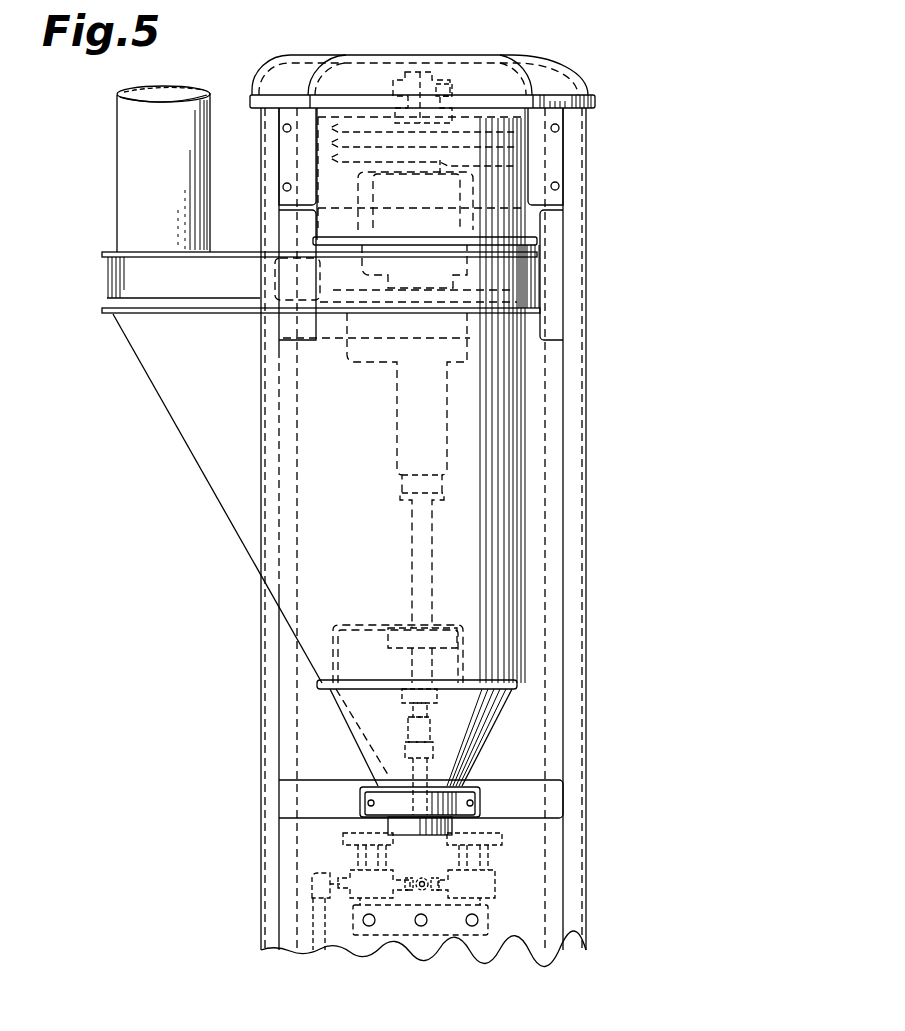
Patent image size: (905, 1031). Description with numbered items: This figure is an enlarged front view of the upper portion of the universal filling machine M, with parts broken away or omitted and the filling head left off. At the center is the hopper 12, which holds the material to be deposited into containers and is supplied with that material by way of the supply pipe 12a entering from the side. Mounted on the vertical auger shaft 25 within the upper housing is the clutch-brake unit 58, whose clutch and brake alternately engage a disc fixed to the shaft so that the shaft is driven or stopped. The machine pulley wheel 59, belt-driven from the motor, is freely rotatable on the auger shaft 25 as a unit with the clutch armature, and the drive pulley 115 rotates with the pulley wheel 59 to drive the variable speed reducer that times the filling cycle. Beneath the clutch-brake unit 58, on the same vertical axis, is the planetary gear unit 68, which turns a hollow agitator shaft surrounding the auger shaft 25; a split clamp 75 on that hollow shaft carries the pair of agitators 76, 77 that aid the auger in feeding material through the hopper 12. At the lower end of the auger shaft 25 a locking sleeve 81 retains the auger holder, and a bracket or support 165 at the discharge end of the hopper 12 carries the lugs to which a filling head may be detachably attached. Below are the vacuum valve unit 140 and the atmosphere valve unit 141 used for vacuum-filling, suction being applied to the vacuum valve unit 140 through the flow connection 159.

The universal filling machine M is at (630, 448).
The auger shaft 25 is at (417, 76).
The drive pulley 115 is at (448, 86).
The machine pulley wheel 59 is at (358, 157).
The clutch-brake unit 58 is at (360, 226).
The supply pipe 12a is at (123, 177).
The hopper 12 is at (219, 475).
The planetary gear unit 68 is at (470, 362).
The split clamp 75 is at (436, 634).
The agitator 76 is at (362, 728).
The agitator 77 is at (458, 742).
The locking sleeve 81 is at (410, 728).
The bracket or support 165 is at (480, 806).
The vacuum valve unit 140 is at (355, 882).
The atmosphere valve unit 141 is at (493, 884).
The flow connection 159 is at (314, 962).